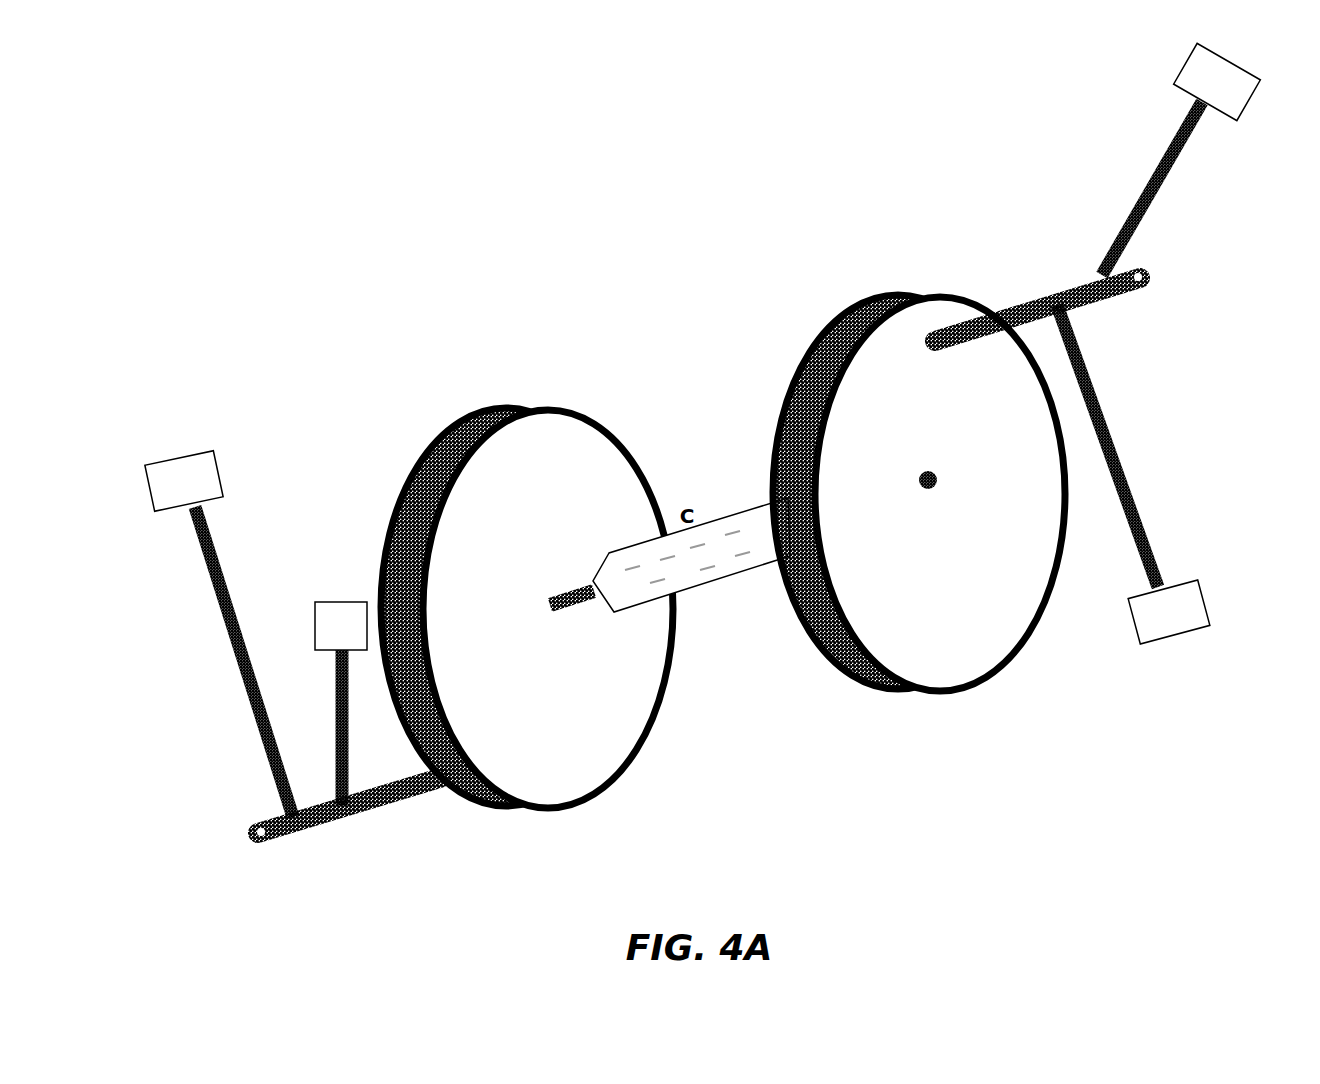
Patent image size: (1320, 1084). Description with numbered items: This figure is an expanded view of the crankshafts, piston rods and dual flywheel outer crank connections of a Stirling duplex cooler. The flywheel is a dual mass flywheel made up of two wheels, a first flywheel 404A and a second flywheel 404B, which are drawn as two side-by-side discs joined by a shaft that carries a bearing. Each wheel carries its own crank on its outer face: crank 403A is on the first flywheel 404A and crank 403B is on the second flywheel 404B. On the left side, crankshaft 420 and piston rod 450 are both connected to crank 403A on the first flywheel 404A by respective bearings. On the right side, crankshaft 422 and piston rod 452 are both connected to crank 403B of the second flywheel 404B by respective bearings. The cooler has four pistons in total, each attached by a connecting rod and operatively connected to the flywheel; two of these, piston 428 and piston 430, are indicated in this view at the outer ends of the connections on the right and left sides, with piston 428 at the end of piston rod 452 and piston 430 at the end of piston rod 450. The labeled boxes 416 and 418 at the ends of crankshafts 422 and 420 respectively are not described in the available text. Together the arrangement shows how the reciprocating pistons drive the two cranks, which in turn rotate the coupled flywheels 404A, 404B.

The crank 403A is at (348, 807).
The crank 403B is at (1038, 304).
The first flywheel 404A is at (527, 631).
The second flywheel 404B is at (919, 515).
The end element 416 is at (1169, 612).
The end element 418 is at (184, 481).
The crankshaft 420 is at (244, 662).
The crankshaft 422 is at (1118, 446).
The piston 428 is at (1217, 81).
The piston 430 is at (341, 626).
The piston rod 450 is at (312, 727).
The piston rod 452 is at (1143, 188).